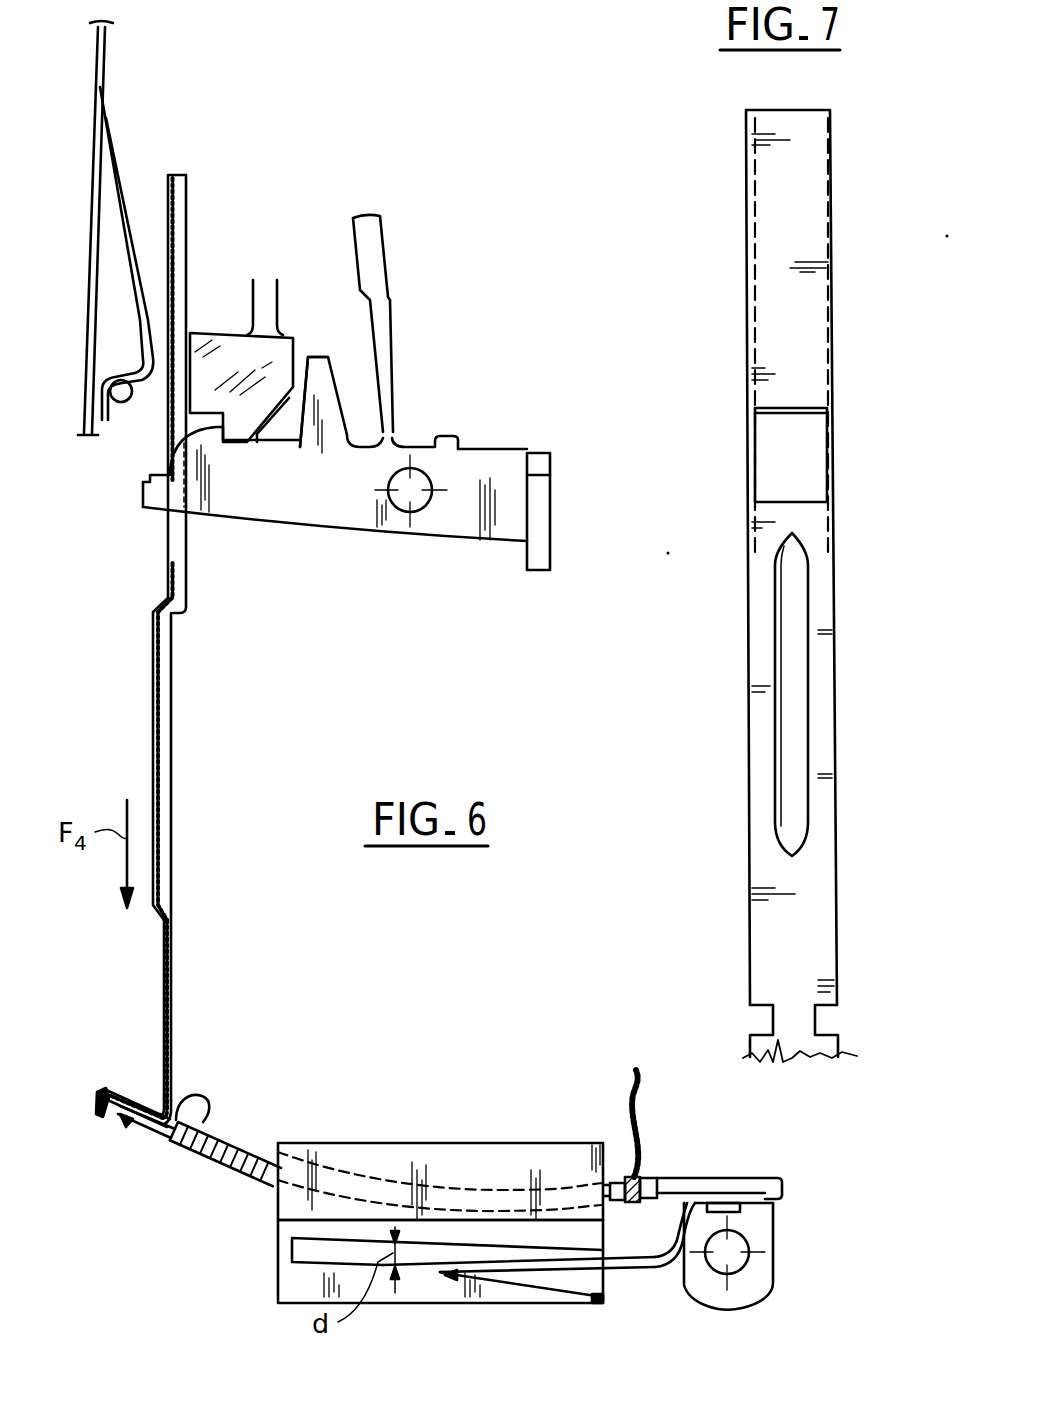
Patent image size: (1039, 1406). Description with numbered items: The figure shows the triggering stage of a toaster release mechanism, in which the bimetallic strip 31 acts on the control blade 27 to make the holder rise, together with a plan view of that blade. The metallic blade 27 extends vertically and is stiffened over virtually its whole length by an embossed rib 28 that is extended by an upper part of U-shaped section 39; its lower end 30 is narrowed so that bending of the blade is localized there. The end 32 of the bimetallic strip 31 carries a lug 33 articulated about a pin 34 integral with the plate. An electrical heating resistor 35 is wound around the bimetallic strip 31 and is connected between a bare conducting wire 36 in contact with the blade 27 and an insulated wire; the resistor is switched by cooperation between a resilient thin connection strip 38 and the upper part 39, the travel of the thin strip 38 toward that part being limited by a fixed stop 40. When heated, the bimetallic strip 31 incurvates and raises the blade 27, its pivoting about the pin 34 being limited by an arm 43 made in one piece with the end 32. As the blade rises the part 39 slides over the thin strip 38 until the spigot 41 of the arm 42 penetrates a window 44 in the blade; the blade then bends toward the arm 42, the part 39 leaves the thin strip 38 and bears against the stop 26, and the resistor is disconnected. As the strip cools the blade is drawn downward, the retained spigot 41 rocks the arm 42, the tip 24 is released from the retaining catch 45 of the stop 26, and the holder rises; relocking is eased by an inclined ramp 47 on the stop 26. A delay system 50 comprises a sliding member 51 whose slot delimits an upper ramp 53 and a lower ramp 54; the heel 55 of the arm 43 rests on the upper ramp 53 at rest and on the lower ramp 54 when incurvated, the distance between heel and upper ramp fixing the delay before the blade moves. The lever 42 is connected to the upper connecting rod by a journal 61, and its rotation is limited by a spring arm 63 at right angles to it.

In FIG. 6, the tip 24 is at (236, 443).
In FIG. 6, the stop 26 is at (280, 357).
In FIG. 6, the metallic blade 27 is at (176, 982).
In FIG. 7, the metallic blade 27 is at (818, 898).
In FIG. 6, the embossed rib 28 is at (160, 775).
In FIG. 7, the embossed rib 28 is at (799, 727).
In FIG. 6, the lower end 30 is at (160, 1085).
In FIG. 7, the lower end 30 is at (801, 1016).
In FIG. 6, the bimetallic strip 31 is at (168, 1126).
In FIG. 6, the end 32 is at (745, 1178).
In FIG. 6, the lug 33 is at (710, 1288).
In FIG. 6, the pin 34 is at (736, 1260).
In FIG. 6, the electrical heating resistor 35 is at (232, 1160).
In FIG. 6, the bare conducting wire 36 is at (207, 1097).
In FIG. 6, the resilient thin connection strip 38 is at (125, 205).
In FIG. 6, the upper part of U-shaped section 39 is at (180, 245).
In FIG. 7, the upper part of U-shaped section 39 is at (802, 226).
In FIG. 6, the fixed stop 40 is at (110, 388).
In FIG. 6, the spigot 41 is at (143, 492).
In FIG. 6, the arm 42 is at (345, 512).
In FIG. 6, the arm 43 is at (503, 1270).
In FIG. 6, the window 44 is at (172, 523).
In FIG. 7, the window 44 is at (802, 448).
In FIG. 6, the retaining catch 45 is at (222, 425).
In FIG. 6, the inclined ramp 47 is at (273, 412).
In FIG. 6, the system 50 is at (300, 1280).
In FIG. 6, the member 51 is at (435, 1155).
In FIG. 6, the upper ramp 53 is at (490, 1255).
In FIG. 6, the lower ramp 54 is at (536, 1284).
In FIG. 6, the heel 55 is at (447, 1278).
In FIG. 6, the journal 61 is at (420, 500).
In FIG. 6, the spring arm 63 is at (385, 322).